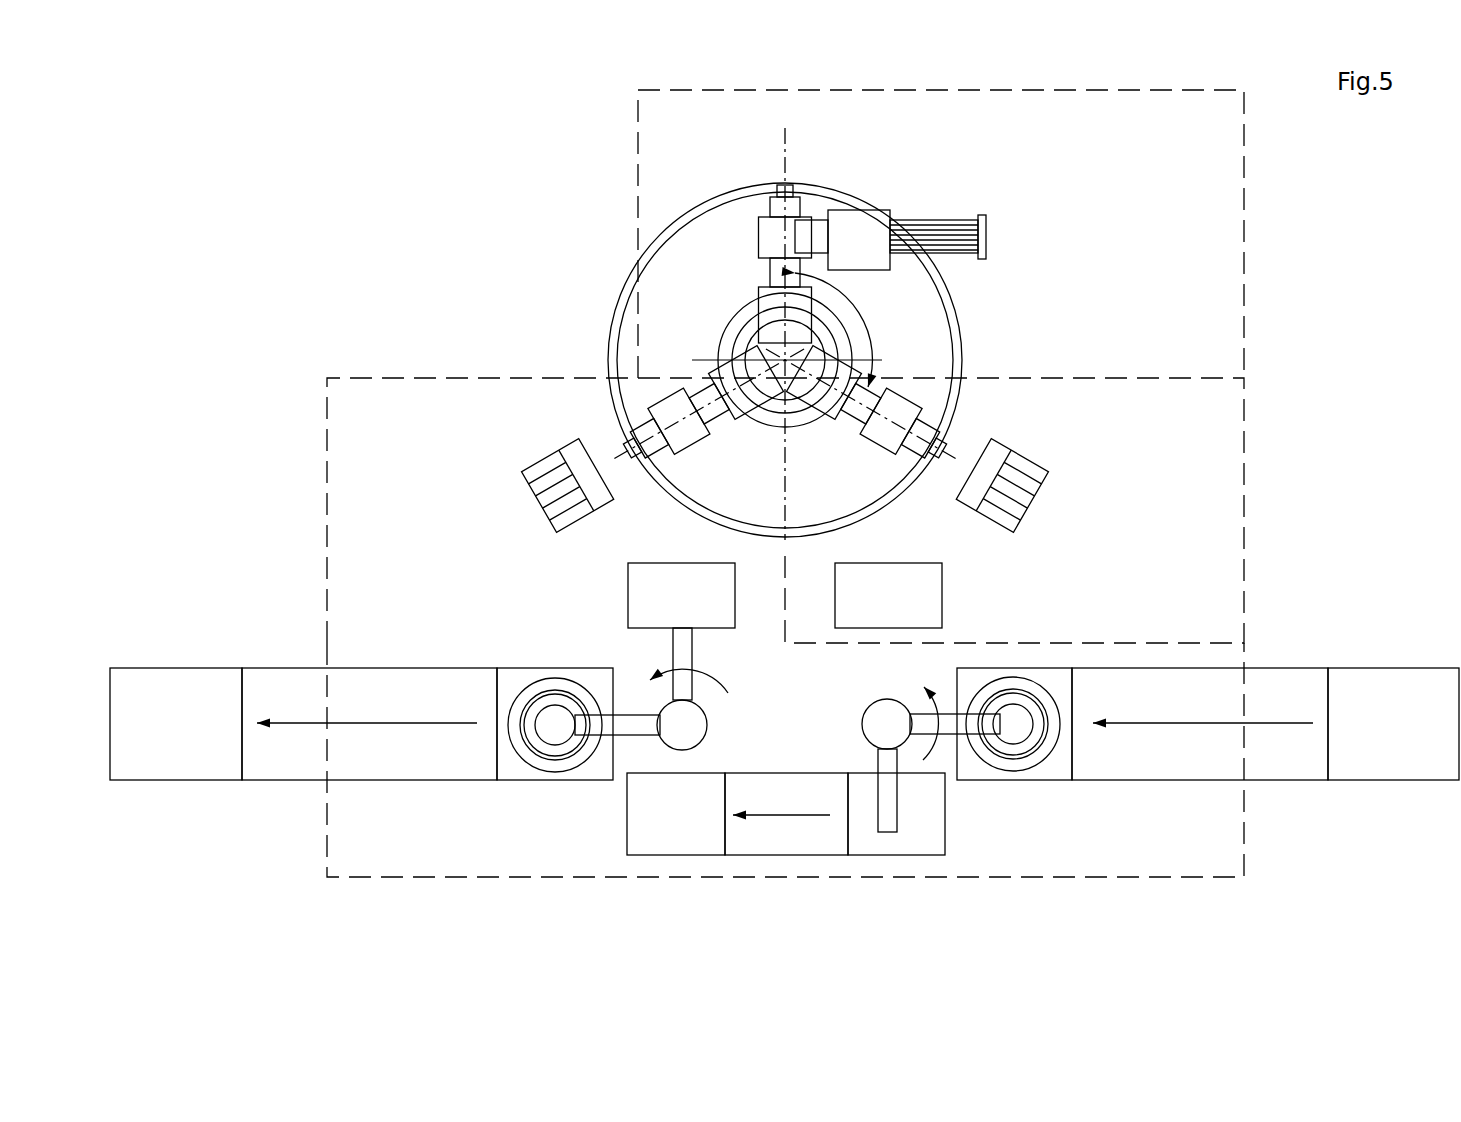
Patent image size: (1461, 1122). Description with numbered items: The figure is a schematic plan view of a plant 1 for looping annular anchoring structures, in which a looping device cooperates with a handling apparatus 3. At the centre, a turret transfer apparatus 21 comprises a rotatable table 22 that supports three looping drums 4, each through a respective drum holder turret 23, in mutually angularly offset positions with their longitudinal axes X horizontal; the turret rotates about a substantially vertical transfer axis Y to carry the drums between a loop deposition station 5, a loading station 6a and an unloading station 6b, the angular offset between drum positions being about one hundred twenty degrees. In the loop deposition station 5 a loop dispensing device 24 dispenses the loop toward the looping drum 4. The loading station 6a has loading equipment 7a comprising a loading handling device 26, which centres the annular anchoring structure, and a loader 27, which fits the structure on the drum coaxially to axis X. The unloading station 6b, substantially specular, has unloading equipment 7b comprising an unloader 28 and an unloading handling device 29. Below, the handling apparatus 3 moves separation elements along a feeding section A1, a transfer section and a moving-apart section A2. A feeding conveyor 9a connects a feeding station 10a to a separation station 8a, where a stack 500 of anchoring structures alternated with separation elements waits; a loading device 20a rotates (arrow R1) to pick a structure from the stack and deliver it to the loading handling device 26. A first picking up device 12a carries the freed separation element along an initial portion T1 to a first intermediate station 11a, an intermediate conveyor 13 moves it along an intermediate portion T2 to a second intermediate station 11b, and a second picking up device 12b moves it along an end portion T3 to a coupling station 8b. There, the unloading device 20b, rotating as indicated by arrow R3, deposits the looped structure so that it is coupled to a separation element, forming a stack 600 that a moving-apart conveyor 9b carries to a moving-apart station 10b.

The plant for looping annular anchoring structures 1 is at (333, 193).
The handling apparatus 3 is at (1245, 837).
The looping drum 4 is at (760, 215).
The loop deposition station 5 is at (678, 90).
The loading station 6a is at (1244, 487).
The unloading station 6b is at (327, 420).
The loading equipment 7a is at (1068, 512).
The unloading equipment 7b is at (500, 508).
The separation station 8a is at (1053, 678).
The coupling station 8b is at (513, 677).
The feeding conveyor 9a is at (1183, 752).
The moving-apart conveyor 9b is at (382, 758).
The feeding station 10a is at (1417, 760).
The moving-apart station 10b is at (163, 758).
The first intermediate station 11a is at (920, 843).
The second intermediate station 11b is at (690, 837).
The first picking up device 12a is at (887, 822).
The second picking up device 12b is at (633, 725).
The intermediate conveyor 13 is at (768, 843).
The loading device 20a is at (960, 723).
The unloading device 20b is at (680, 658).
The turret transfer apparatus 21 is at (698, 315).
The rotatable table 22 is at (730, 305).
The drum holder turret 23 is at (767, 303).
The loop dispensing device 24 is at (882, 198).
The loading handling device 26 is at (870, 599).
The loader 27 is at (1038, 450).
The unloader 28 is at (537, 463).
The unloading handling device 29 is at (664, 599).
The stack 500 is at (1040, 767).
The stack of separation elements alternated with looped annular anchoring structures 600 is at (532, 763).
The feeding section A1 is at (1273, 720).
The moving-apart section A2 is at (302, 722).
The rotation of the loading device R1 is at (920, 700).
The rotation of the unloading device R3 is at (728, 693).
The initial portion of the transfer section T1 is at (987, 758).
The intermediate portion of the transfer section T2 is at (790, 813).
The end portion of the transfer section T3 is at (587, 755).
The longitudinal axis of the looping drum X is at (783, 145).
The transfer axis Y is at (775, 402).